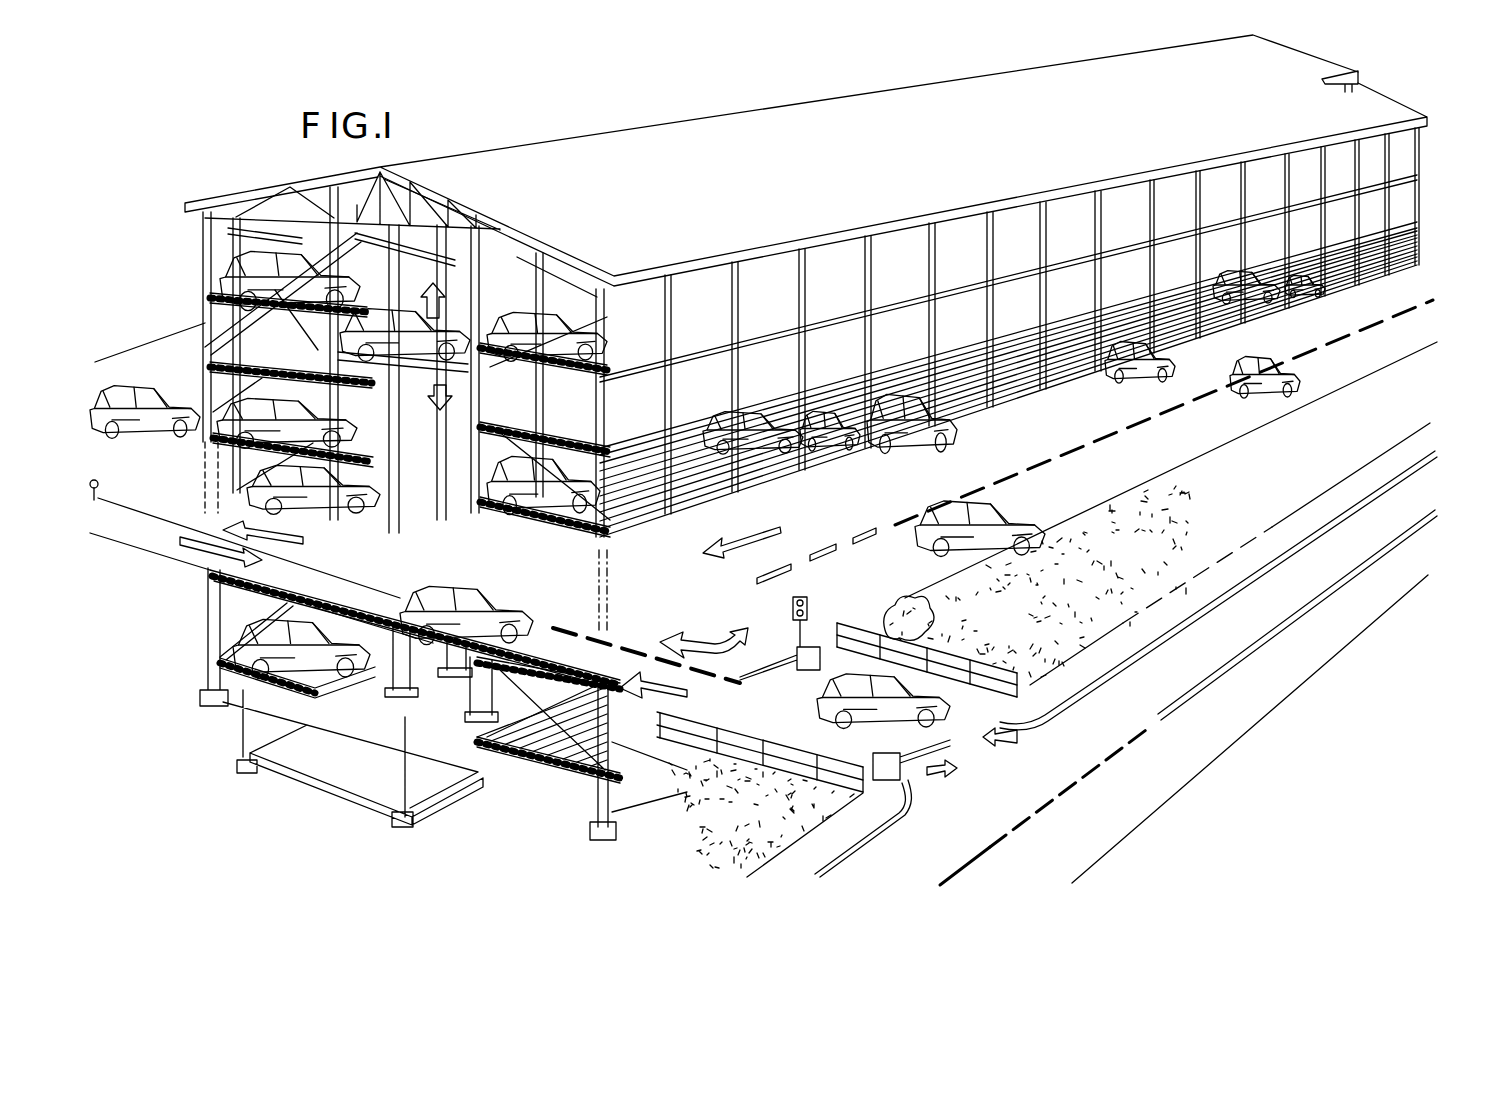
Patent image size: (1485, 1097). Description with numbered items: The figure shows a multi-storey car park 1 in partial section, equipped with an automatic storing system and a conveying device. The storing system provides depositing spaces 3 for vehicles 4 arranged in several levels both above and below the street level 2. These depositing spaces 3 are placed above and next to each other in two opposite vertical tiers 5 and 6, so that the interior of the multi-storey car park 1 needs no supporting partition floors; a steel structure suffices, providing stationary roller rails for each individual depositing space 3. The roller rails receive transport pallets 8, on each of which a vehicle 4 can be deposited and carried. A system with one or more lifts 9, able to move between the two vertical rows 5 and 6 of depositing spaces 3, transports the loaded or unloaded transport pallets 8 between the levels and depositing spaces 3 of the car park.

The multi-storey car park 1 is at (757, 95).
The street level 2 is at (763, 592).
The depositing space 3 is at (250, 297).
The vehicle 4 is at (265, 280).
The vertical tier 5 is at (231, 752).
The vertical tier 6 is at (534, 830).
The transport pallet 8 is at (233, 357).
The lift 9 is at (369, 466).